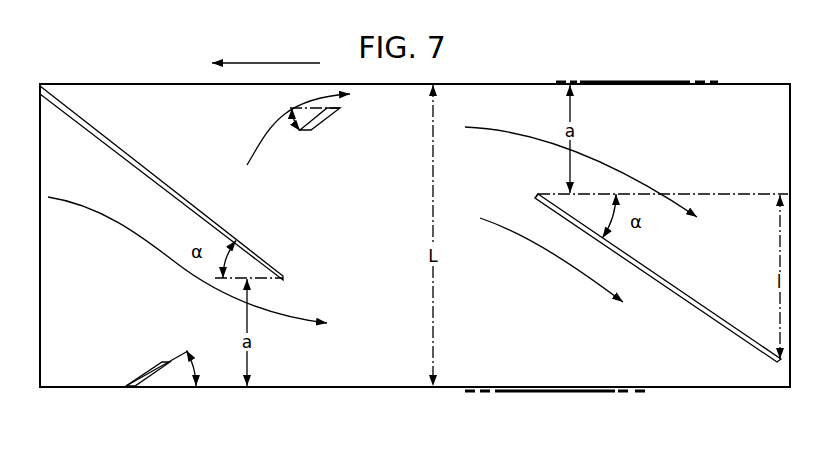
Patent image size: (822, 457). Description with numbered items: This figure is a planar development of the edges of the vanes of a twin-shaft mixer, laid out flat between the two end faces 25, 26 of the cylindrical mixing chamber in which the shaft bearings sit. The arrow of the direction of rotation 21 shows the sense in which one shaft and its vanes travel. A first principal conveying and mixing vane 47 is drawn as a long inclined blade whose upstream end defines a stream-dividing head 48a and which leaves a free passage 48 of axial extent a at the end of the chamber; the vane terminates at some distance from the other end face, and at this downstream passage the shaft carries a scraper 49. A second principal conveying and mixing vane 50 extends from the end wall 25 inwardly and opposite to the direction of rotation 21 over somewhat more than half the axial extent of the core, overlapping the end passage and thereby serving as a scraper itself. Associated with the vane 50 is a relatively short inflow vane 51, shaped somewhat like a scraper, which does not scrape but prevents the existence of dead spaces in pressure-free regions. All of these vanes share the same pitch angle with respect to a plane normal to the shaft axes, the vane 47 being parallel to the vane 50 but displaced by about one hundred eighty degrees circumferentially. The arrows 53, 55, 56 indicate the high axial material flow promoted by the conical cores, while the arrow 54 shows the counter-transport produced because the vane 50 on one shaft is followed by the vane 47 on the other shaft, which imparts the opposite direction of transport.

The direction of rotation 21 is at (274, 63).
The end face 25 is at (635, 81).
The end face 26 is at (562, 393).
The first principal conveying and mixing vane 47 is at (688, 309).
The free passage 48 is at (543, 155).
The stream-dividing head 48a is at (539, 194).
The scraper 49 is at (136, 366).
The second principal conveying and mixing vane 50 is at (171, 188).
The inflow vane 51 is at (325, 124).
The arrow 53 is at (160, 248).
The arrow 54 is at (268, 122).
The arrow 55 is at (549, 252).
The arrow 56 is at (608, 165).